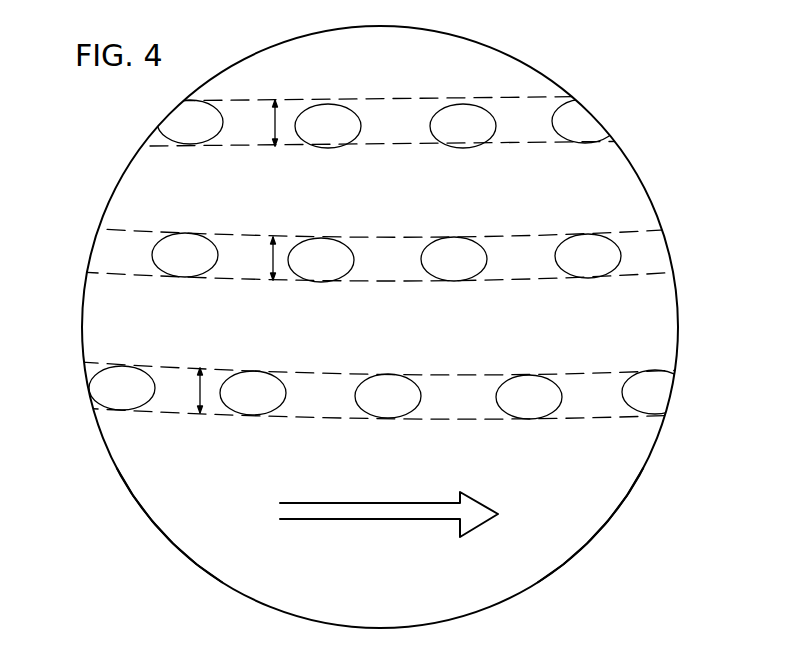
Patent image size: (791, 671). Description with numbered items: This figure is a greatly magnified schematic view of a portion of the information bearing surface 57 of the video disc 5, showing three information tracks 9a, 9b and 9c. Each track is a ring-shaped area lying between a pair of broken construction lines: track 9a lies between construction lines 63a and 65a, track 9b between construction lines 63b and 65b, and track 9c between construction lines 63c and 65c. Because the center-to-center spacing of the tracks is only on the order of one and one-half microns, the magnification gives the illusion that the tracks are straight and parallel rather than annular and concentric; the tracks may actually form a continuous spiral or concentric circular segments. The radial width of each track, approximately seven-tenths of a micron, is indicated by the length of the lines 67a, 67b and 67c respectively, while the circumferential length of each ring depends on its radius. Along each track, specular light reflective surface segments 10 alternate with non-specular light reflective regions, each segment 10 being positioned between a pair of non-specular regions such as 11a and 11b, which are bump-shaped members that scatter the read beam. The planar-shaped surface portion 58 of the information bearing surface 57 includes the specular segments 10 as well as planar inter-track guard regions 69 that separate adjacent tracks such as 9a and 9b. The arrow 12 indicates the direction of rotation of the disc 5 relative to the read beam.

The video disc 5 is at (563, 79).
The information track 9a is at (348, 97).
The information track 9b is at (352, 247).
The information track 9c is at (355, 405).
The specular light reflective surface segments 10 is at (388, 255).
The non-specular light reflective region 11a is at (468, 127).
The non-specular light reflective region 11b is at (328, 115).
The arrow 12 is at (368, 523).
The information bearing surface 57 is at (192, 509).
The planar-shaped surface portion 58 is at (587, 508).
The construction line 63a is at (218, 99).
The construction line 63b is at (140, 231).
The construction line 63c is at (106, 362).
The construction line 65a is at (160, 144).
The construction line 65b is at (162, 277).
The construction line 65c is at (123, 408).
The line 67a is at (270, 116).
The line 67b is at (271, 261).
The line 67c is at (200, 385).
The inter-track guard regions 69 is at (395, 204).